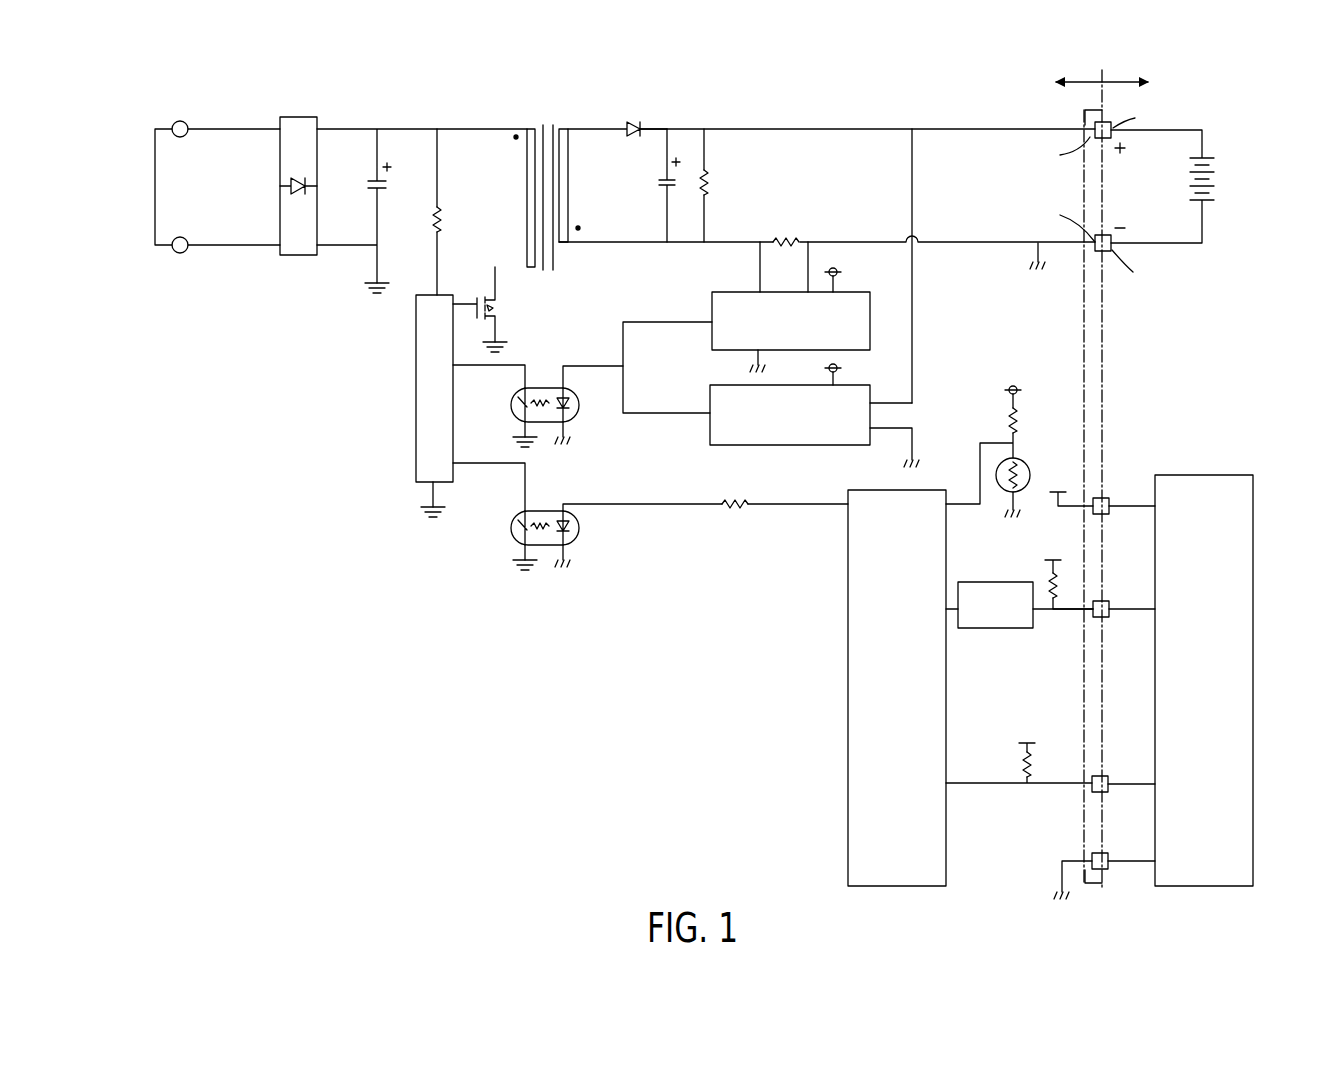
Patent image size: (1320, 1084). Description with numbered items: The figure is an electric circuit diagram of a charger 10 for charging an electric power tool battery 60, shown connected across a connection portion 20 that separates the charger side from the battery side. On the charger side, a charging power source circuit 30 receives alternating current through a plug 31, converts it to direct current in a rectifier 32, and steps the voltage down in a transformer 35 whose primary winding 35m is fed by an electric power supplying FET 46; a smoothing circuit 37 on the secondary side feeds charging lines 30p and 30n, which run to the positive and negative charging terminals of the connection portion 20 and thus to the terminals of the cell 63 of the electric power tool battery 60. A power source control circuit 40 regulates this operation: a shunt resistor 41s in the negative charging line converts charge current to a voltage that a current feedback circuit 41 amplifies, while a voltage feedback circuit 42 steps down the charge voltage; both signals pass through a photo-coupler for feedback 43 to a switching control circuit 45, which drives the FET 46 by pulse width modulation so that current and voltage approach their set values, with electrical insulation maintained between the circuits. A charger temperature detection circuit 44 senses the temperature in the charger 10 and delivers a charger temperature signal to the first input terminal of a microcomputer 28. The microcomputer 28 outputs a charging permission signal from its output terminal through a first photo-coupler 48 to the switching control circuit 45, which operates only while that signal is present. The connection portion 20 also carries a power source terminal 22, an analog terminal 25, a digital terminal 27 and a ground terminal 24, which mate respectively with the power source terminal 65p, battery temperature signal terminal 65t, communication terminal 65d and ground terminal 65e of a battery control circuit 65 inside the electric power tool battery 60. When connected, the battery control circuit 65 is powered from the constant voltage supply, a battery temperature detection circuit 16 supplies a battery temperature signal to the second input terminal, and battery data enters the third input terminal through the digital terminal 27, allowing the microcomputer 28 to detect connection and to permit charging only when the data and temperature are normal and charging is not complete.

The charger 10 is at (765, 110).
The battery temperature detection circuit 16 is at (990, 588).
The connection portion 20 is at (1080, 122).
The power source terminal 22 is at (1096, 498).
The ground terminal 24 is at (1092, 857).
The analog terminal 25 is at (1103, 617).
The digital terminal 27 is at (1092, 790).
The microcomputer 28 is at (865, 621).
The charging power source circuit 30 is at (683, 124).
The charging line 30p is at (850, 129).
The charging line 30n is at (852, 242).
The plug 31 is at (155, 178).
The rectifier 32 is at (300, 135).
The transformer 35 is at (551, 118).
The primary winding 35m is at (533, 132).
The smoothing circuit 37 is at (635, 190).
The power source control circuit 40 is at (483, 553).
The current feedback circuit 41 is at (740, 292).
The shunt resistor 41s is at (787, 242).
The voltage feedback circuit 42 is at (710, 428).
The photo-coupler for feedback 43 is at (580, 405).
The charger temperature detection circuit 44 is at (978, 440).
The switching control circuit 45 is at (423, 413).
The electric power supplying FET 46 is at (502, 298).
The first photo-coupler 48 is at (580, 528).
The electric power tool battery 60 is at (1192, 328).
The cell 63 is at (1215, 177).
The battery control circuit 65 is at (1230, 640).
The power source terminal 65p is at (1104, 498).
The battery temperature signal terminal 65t is at (1104, 601).
The communication terminal 65d is at (1104, 777).
The ground terminal 65e is at (1104, 853).